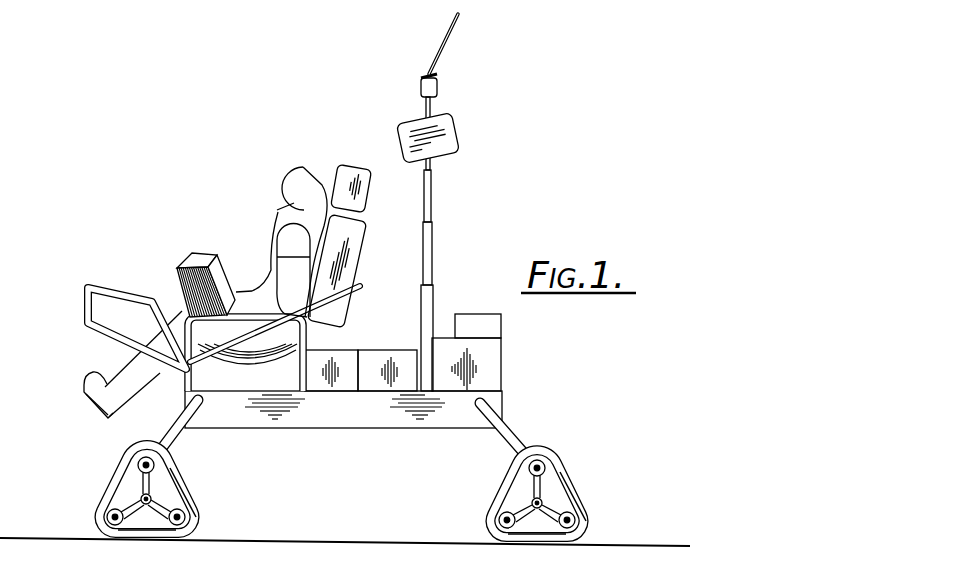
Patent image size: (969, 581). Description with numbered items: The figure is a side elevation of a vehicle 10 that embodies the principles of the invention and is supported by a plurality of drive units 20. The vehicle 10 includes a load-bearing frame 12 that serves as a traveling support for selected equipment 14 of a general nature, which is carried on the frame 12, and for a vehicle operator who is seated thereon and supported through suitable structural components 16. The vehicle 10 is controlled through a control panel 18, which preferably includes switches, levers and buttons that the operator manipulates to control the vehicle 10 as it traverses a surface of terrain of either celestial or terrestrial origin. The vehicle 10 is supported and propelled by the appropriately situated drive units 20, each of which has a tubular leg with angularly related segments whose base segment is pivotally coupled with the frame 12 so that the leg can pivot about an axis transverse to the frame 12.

The vehicle 10 is at (372, 434).
The load-bearing frame 12 is at (410, 418).
The equipment 14 is at (497, 354).
The structural components 16 is at (176, 371).
The control panel 18 is at (171, 253).
The drive units 20 is at (102, 491).